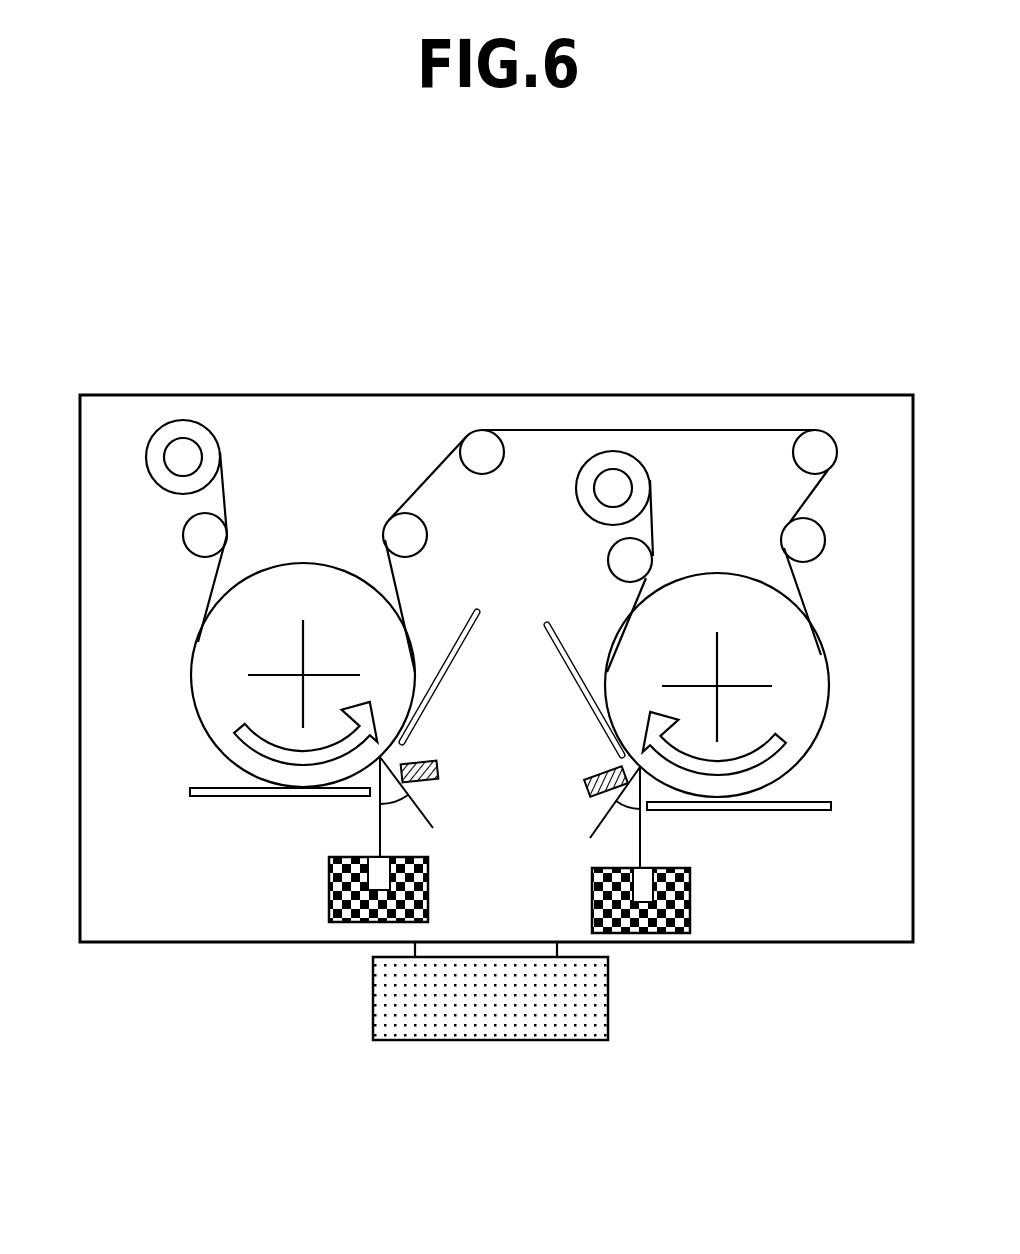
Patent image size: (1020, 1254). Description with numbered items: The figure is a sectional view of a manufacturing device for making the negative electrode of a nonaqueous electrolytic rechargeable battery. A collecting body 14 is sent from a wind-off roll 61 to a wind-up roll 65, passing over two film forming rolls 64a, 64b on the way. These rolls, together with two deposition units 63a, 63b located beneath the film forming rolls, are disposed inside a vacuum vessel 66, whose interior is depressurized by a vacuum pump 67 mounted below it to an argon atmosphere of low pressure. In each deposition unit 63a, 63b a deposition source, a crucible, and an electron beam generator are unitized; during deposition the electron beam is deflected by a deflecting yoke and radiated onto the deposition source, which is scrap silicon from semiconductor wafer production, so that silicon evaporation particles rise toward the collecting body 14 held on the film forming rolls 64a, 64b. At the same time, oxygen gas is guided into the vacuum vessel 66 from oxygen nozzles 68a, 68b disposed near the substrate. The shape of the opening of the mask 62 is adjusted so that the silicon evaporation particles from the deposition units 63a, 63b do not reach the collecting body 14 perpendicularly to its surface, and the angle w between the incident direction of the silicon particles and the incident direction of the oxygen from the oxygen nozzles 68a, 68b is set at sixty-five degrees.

The collecting body 14 is at (210, 580).
The wind-off roll 61 is at (193, 432).
The mask 62 is at (598, 727).
The deposition unit 63a is at (329, 897).
The deposition unit 63b is at (592, 900).
The film forming roll 64a is at (232, 692).
The film forming roll 64b is at (807, 673).
The wind-up roll 65 is at (612, 458).
The vacuum vessel 66 is at (493, 393).
The vacuum pump 67 is at (390, 993).
The oxygen nozzle 68a is at (437, 772).
The oxygen nozzle 68b is at (585, 785).